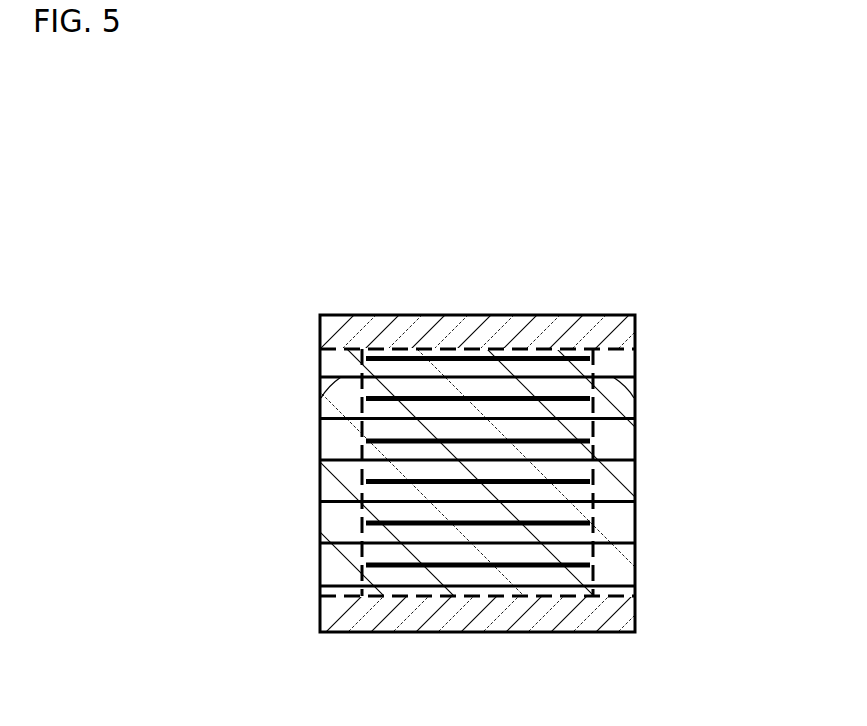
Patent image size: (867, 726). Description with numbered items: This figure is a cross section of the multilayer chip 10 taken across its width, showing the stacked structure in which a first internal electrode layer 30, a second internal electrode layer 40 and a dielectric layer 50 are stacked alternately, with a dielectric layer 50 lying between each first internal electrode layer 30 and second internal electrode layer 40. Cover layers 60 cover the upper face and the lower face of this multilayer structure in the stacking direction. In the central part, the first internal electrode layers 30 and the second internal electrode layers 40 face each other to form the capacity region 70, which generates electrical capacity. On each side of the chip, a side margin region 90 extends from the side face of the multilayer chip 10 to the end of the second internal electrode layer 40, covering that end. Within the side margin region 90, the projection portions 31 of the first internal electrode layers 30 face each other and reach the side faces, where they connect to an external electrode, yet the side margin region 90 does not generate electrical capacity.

The multilayer chip 10 is at (661, 247).
The first internal electrode layer 30 is at (407, 362).
The projection portion 31 is at (320, 398).
The second internal electrode layer 40 is at (413, 567).
The dielectric layer 50 is at (512, 553).
The cover layer 60 is at (542, 330).
The capacity region 70 is at (473, 349).
The side margin region 90 is at (346, 347).